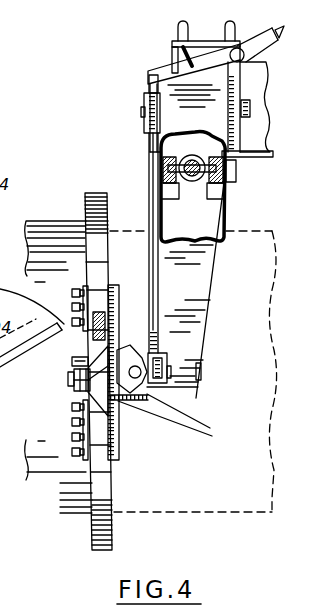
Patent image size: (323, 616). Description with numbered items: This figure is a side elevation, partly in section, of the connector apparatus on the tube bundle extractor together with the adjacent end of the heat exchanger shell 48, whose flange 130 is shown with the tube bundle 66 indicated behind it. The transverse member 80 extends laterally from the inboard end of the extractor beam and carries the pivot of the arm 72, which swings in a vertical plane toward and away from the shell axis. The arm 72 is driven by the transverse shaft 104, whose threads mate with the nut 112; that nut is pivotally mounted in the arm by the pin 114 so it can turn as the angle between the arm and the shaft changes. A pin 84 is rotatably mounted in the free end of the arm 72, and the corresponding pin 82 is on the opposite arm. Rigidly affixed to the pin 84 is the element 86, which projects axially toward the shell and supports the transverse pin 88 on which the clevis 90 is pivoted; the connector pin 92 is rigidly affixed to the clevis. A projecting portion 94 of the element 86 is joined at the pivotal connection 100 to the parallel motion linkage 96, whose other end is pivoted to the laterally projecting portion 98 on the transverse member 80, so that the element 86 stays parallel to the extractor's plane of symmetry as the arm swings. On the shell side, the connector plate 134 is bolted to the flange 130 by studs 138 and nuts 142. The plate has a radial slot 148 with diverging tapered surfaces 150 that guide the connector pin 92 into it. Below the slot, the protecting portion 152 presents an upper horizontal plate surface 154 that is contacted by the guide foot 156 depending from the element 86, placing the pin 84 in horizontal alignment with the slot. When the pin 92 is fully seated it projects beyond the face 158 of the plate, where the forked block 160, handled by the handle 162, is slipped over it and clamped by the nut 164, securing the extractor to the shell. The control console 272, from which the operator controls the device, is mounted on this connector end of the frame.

The control console 272 is at (195, 52).
The laterally projecting portion 98 is at (146, 88).
The transverse shaft 104 is at (143, 149).
The parallel motion linkage 96 is at (149, 167).
The transverse member 80 is at (236, 89).
The pin 114 is at (161, 198).
The nut 112 is at (207, 186).
The shell 48 is at (55, 221).
The nuts 142 is at (110, 288).
The studs 138 is at (53, 301).
The handle 162 is at (101, 316).
The radial slot 148 is at (134, 366).
The arm 72 is at (197, 292).
The transverse pin 88 is at (203, 319).
The element 86 is at (202, 346).
The projecting portion 94 is at (165, 360).
The pin 84 is at (203, 373).
The nut 164 is at (72, 362).
The pivotal connection 100 is at (0, 377).
The pin 82 is at (0, 395).
The connector pin 92 is at (74, 389).
The upper horizontal plate surface 154 is at (32, 353).
The diverging tapered surfaces 150 is at (95, 385).
The face 158 is at (74, 428).
The forked block 160 is at (114, 424).
The connector plate 134 is at (119, 461).
The shell flange 130 is at (112, 537).
The guide foot 156 is at (148, 396).
The protecting portion 152 is at (158, 399).
The clevis 90 is at (165, 408).
The tube bundle 66 is at (200, 512).